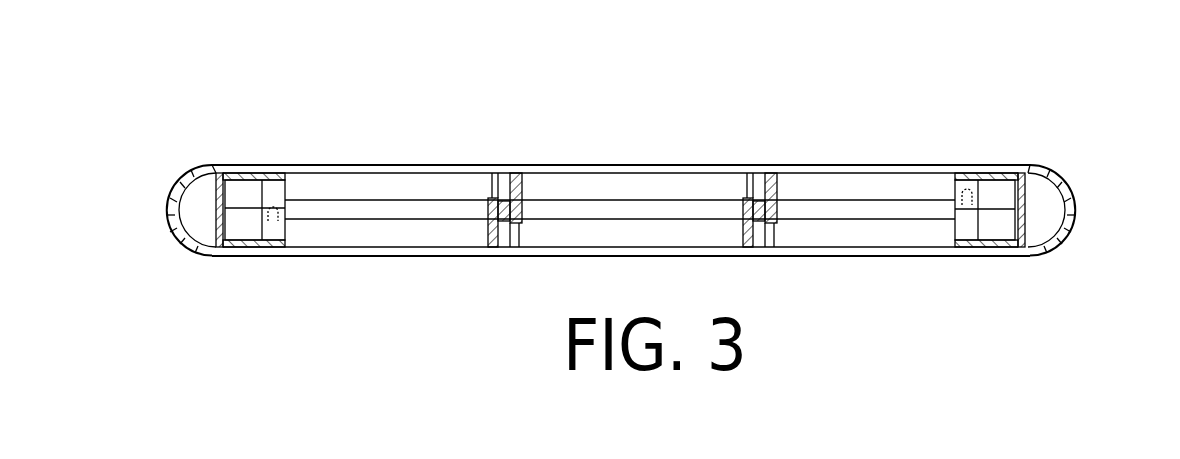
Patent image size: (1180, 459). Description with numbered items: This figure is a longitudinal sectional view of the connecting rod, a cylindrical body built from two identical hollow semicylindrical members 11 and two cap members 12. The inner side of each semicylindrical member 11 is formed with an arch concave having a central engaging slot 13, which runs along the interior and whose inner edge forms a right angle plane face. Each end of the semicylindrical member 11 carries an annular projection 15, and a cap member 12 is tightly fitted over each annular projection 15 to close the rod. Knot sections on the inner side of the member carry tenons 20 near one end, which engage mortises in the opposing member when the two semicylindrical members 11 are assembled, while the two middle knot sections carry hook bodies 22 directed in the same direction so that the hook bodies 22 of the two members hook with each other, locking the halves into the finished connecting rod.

The hollow semicylindrical member 11 is at (620, 172).
The cap member 12 is at (185, 170).
The central engaging slot 13 is at (820, 207).
The annular projection 15 is at (243, 170).
The tenon 20 is at (273, 221).
The hook body 22 is at (522, 172).